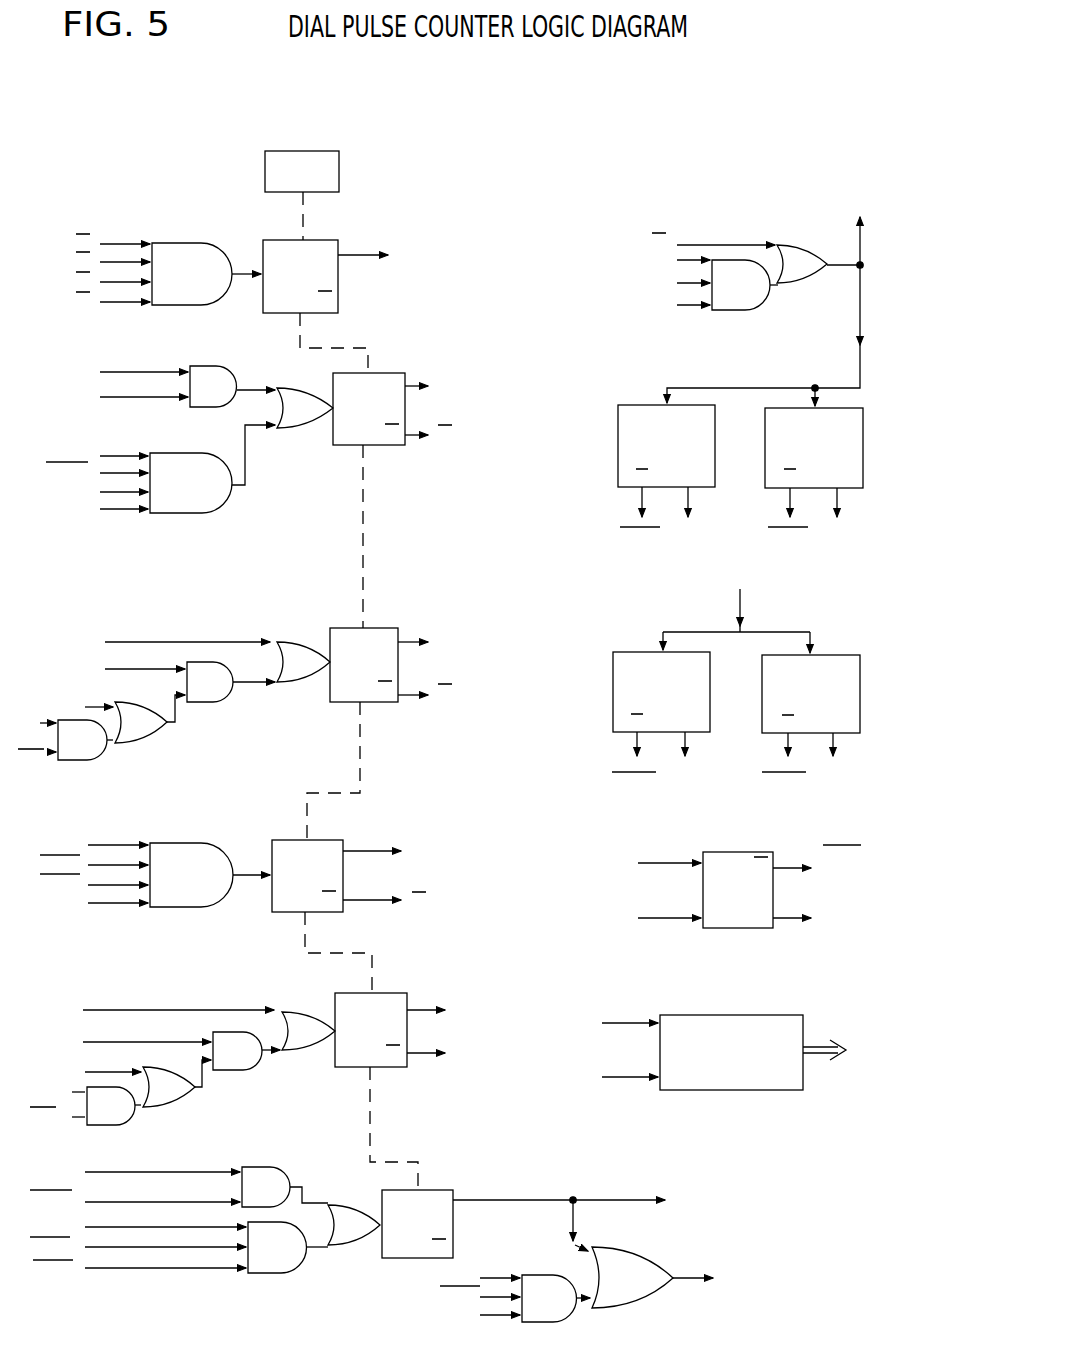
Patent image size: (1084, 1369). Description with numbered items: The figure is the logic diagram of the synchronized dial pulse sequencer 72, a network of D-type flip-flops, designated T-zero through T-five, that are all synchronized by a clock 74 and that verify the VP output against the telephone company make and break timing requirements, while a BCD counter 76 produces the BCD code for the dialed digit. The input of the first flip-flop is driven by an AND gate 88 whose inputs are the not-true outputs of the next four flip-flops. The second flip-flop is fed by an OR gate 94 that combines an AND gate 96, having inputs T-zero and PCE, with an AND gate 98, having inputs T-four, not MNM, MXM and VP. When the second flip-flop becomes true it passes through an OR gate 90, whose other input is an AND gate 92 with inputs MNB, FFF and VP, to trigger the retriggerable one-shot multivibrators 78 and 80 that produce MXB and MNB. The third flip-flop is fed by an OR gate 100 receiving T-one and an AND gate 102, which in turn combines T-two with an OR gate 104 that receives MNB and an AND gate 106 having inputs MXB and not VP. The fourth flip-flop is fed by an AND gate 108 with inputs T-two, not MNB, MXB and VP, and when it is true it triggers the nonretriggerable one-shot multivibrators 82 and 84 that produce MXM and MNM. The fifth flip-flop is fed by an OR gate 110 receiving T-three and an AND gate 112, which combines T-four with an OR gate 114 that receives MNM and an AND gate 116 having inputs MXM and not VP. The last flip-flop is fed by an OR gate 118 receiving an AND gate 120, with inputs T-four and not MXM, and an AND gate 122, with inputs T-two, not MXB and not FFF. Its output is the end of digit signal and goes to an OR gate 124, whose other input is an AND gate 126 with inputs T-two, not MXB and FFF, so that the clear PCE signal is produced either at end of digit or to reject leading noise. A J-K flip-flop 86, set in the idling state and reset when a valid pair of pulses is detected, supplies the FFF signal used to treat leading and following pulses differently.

The dial pulse sequencer 72 is at (466, 126).
The clock 74 is at (339, 172).
The BCD counter 76 is at (727, 1015).
The retriggerable one-shot monostable multivibrator 78 is at (863, 446).
The retriggerable one-shot monostable multivibrator 80 is at (618, 446).
The nonretriggerable one-shot monostable multivibrator 82 is at (860, 686).
The nonretriggerable one-shot monostable multivibrator 84 is at (613, 684).
The J-K flip-flop 86 is at (740, 852).
The AND gate 88 is at (183, 243).
The OR gate 90 is at (792, 245).
The AND gate 92 is at (744, 310).
The OR gate 94 is at (305, 430).
The AND gate 96 is at (226, 366).
The AND gate 98 is at (216, 512).
The OR gate 100 is at (302, 642).
The AND gate 102 is at (229, 702).
The OR gate 104 is at (160, 742).
The AND gate 106 is at (100, 760).
The AND gate 108 is at (216, 845).
The OR gate 110 is at (295, 1012).
The AND gate 112 is at (248, 1070).
The OR gate 114 is at (190, 1100).
The AND gate 116 is at (130, 1125).
The OR gate 118 is at (343, 1247).
The AND gate 120 is at (284, 1168).
The AND gate 122 is at (280, 1273).
The OR gate 124 is at (655, 1299).
The AND gate 126 is at (536, 1275).